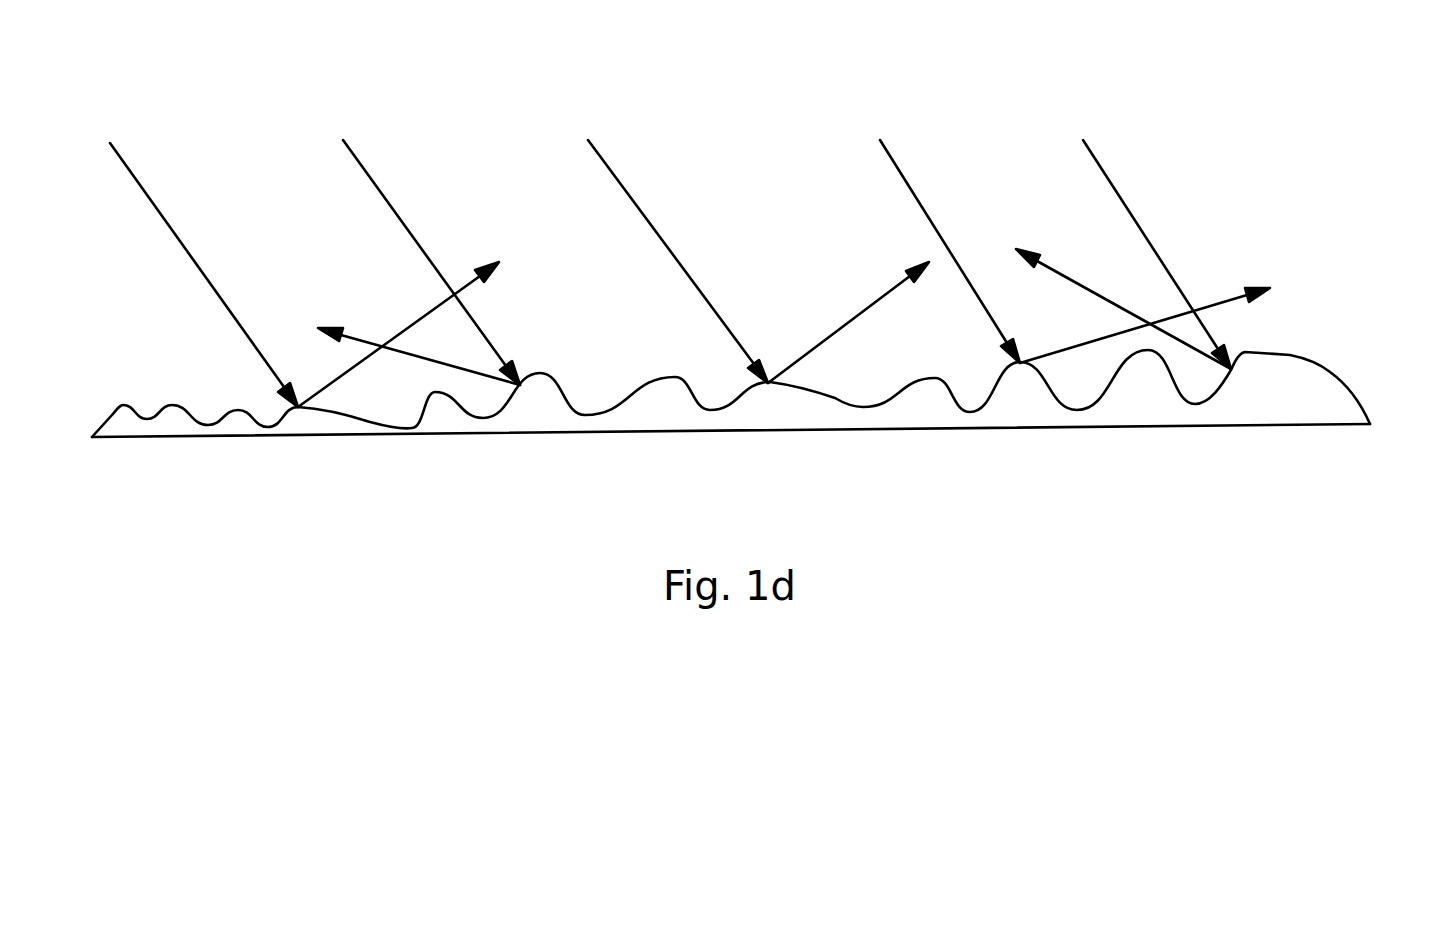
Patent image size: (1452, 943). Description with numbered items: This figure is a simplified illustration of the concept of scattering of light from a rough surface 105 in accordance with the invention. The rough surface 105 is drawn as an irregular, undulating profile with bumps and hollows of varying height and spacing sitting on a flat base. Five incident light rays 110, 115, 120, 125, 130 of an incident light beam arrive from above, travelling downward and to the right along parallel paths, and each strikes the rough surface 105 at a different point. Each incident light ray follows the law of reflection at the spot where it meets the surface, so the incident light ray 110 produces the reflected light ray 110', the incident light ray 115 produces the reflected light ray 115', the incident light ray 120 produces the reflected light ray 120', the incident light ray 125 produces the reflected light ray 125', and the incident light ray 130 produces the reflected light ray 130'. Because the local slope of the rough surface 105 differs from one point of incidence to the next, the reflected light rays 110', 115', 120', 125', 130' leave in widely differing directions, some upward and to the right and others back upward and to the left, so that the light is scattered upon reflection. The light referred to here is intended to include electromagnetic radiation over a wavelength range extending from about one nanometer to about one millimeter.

The rough surface 105 is at (1333, 368).
The incident light ray 110 is at (204, 237).
The incident light ray 115 is at (431, 224).
The incident light ray 120 is at (671, 220).
The incident light ray 125 is at (937, 208).
The incident light ray 130 is at (1148, 201).
The reflected light ray 110' is at (401, 312).
The reflected light ray 115' is at (413, 329).
The reflected light ray 120' is at (848, 305).
The reflected light ray 125' is at (1145, 295).
The reflected light ray 130' is at (1123, 281).